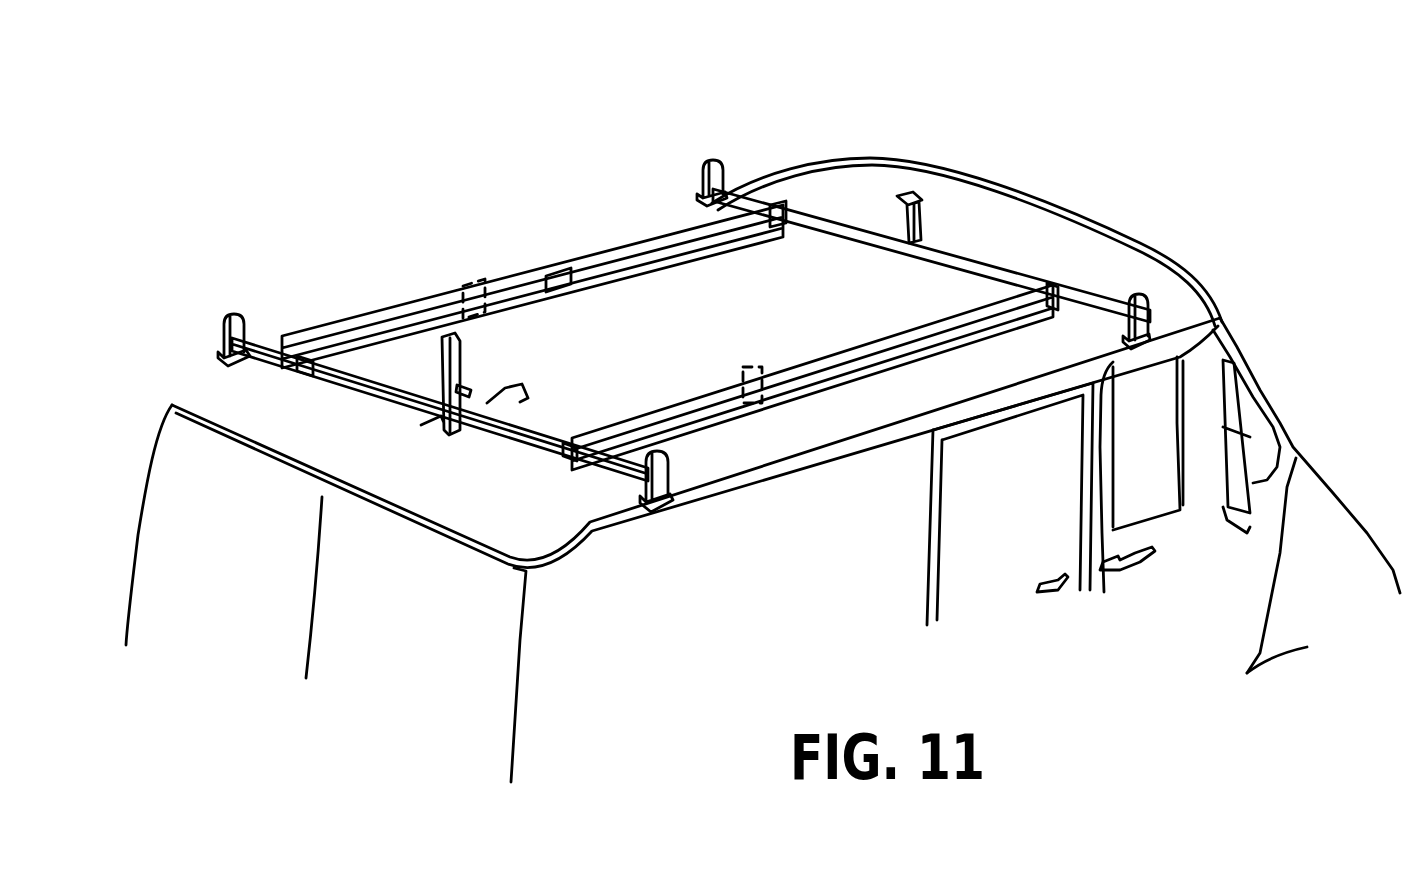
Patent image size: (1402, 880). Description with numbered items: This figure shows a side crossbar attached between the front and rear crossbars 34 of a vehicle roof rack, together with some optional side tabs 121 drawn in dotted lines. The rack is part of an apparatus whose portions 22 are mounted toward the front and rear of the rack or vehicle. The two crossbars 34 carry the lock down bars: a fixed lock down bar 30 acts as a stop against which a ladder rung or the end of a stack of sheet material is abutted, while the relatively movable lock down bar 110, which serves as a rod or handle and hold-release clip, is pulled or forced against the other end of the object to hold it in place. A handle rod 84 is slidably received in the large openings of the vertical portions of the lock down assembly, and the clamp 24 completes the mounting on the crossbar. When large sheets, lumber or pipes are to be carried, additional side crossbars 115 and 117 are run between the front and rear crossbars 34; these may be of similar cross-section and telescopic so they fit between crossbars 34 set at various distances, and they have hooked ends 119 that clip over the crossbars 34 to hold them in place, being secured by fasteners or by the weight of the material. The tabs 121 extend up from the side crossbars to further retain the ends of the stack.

The portion of the apparatus 22 is at (940, 214).
The clamp assembly 24 is at (432, 392).
The lock down bar 30 is at (932, 212).
The crossbar 34 is at (840, 213).
The handle rod 84 is at (500, 385).
The lock down bar 110 is at (411, 322).
The side crossbar 115 is at (1020, 290).
The side crossbar 117 is at (548, 274).
The hooked ends 119 is at (774, 200).
The tabs 121 is at (480, 282).